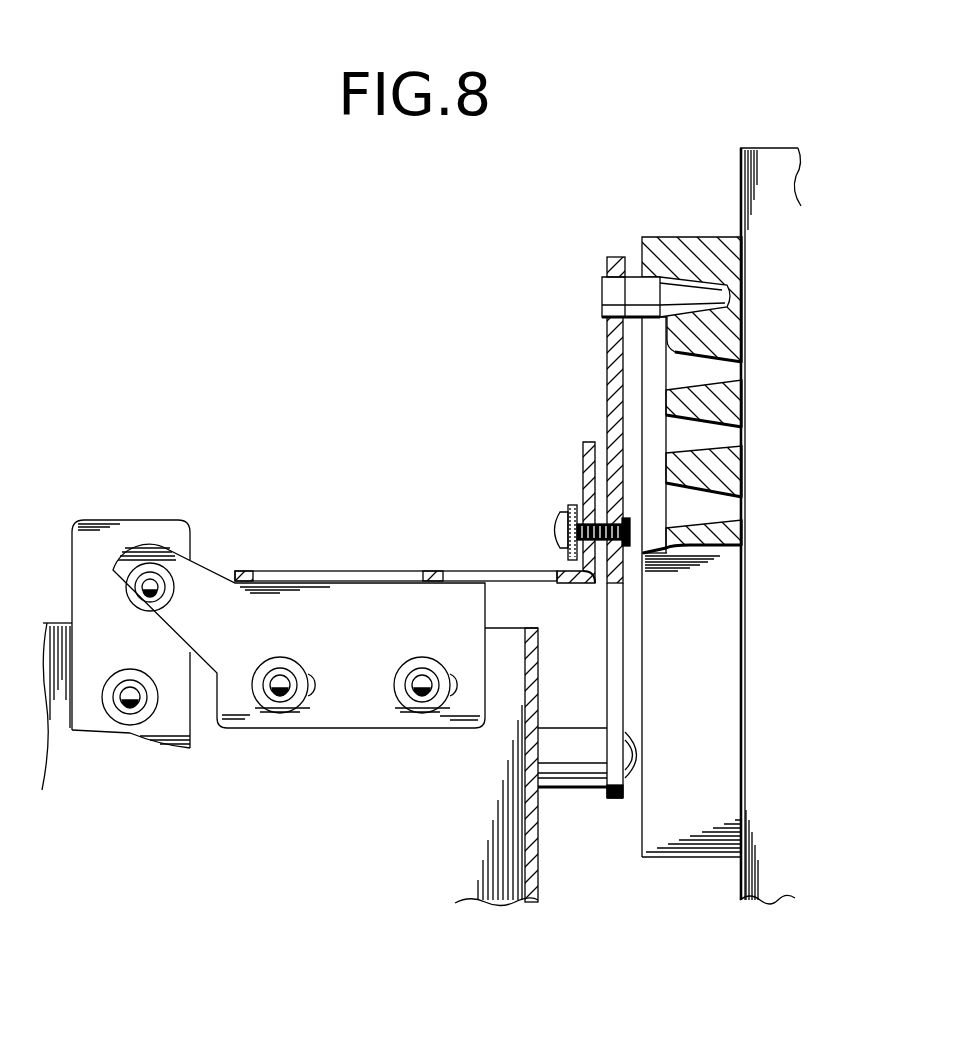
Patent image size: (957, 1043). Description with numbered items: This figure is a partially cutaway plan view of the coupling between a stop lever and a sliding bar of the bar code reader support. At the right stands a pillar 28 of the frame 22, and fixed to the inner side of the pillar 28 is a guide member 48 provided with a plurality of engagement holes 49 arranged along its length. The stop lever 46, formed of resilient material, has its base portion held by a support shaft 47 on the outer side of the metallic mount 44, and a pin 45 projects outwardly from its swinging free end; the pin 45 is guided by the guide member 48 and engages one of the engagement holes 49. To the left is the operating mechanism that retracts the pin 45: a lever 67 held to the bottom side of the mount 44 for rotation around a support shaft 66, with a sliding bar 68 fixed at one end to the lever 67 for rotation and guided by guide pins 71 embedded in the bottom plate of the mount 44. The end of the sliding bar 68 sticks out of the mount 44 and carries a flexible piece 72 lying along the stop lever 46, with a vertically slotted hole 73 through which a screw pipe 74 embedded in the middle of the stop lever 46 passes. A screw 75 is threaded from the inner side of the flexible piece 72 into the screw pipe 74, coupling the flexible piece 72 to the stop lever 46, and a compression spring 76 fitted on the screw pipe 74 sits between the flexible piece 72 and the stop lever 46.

The frame 22 is at (775, 163).
The pillar 28 is at (739, 163).
The mount 44 is at (540, 833).
The pin 45 is at (665, 253).
The stop lever 46 is at (606, 261).
The support shaft 47 is at (567, 737).
The guide member 48 is at (700, 240).
The engagement holes 49 is at (742, 300).
The support shaft 66 is at (130, 733).
The lever 67 is at (122, 537).
The sliding bar 68 is at (288, 612).
The guide pins 71 is at (285, 722).
The flexible piece 72 is at (588, 442).
The slotted hole 73 is at (582, 513).
The screw pipe 74 is at (631, 516).
The screw 75 is at (552, 524).
The compression spring 76 is at (601, 562).